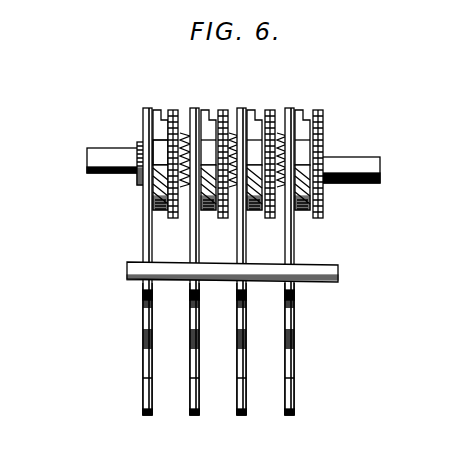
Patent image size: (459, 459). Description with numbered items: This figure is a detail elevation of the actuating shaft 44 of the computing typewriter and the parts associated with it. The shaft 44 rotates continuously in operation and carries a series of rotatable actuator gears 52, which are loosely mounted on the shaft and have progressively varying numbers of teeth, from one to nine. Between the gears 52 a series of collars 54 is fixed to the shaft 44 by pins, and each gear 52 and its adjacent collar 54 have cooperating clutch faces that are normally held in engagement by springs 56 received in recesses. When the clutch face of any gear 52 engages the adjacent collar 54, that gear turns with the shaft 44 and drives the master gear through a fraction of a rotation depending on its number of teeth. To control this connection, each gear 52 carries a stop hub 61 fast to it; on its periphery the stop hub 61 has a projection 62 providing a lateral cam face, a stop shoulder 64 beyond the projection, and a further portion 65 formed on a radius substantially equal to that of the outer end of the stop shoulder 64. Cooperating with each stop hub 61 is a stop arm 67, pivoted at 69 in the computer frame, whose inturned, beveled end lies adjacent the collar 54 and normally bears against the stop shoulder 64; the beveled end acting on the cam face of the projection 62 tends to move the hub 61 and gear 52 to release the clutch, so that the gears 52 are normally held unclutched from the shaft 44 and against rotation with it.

The actuating shaft 44 is at (101, 157).
The collar 54 is at (146, 108).
The stop hub 61 is at (162, 125).
The stop shoulder 64 is at (160, 155).
The projection 62 is at (163, 178).
The actuator gear 52 is at (222, 110).
The portion 65 is at (251, 112).
The spring 56 is at (280, 150).
The pivot 69 is at (127, 268).
The stop arm 67 is at (146, 390).